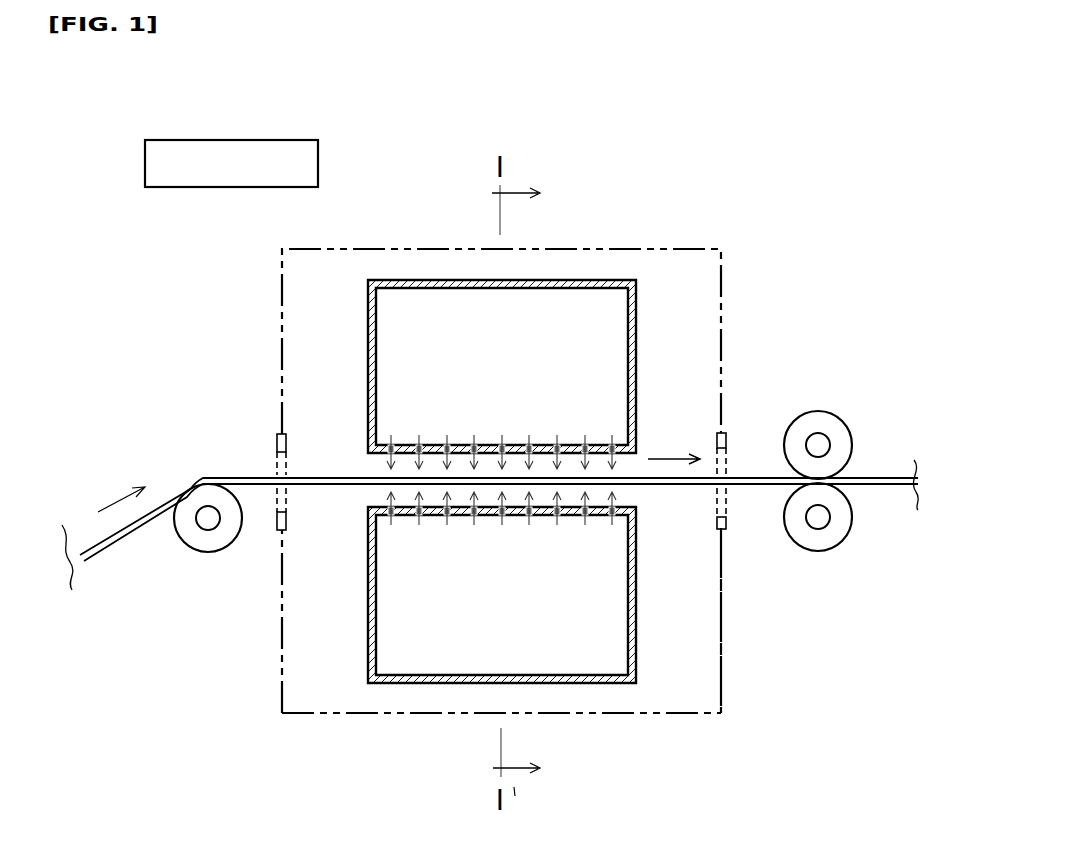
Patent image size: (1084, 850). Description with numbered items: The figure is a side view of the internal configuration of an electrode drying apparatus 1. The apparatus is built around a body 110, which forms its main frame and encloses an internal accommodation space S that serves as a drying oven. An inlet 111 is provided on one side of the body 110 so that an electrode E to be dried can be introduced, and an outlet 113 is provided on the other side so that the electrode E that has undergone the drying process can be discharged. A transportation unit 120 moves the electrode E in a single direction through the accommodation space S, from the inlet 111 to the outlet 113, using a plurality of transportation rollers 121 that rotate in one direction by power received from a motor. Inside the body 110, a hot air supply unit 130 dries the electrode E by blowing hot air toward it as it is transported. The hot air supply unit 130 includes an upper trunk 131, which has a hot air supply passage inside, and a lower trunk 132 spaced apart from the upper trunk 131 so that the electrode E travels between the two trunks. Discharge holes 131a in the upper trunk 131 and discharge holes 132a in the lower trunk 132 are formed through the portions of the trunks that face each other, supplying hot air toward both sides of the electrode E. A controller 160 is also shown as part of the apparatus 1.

The electrode drying apparatus 1 is at (554, 404).
The body 110 is at (723, 347).
The accommodation space S is at (734, 267).
The inlet 111 is at (273, 448).
The outlet 113 is at (728, 445).
The transportation unit 120 is at (483, 528).
The transportation rollers 121 is at (220, 540).
The hot air supply unit 130 is at (454, 490).
The upper trunk 131 is at (467, 334).
The discharge holes 131a is at (445, 446).
The lower trunk 132 is at (466, 637).
The discharge holes 132a is at (447, 508).
The controller 160 is at (238, 141).
The electrode E is at (170, 487).